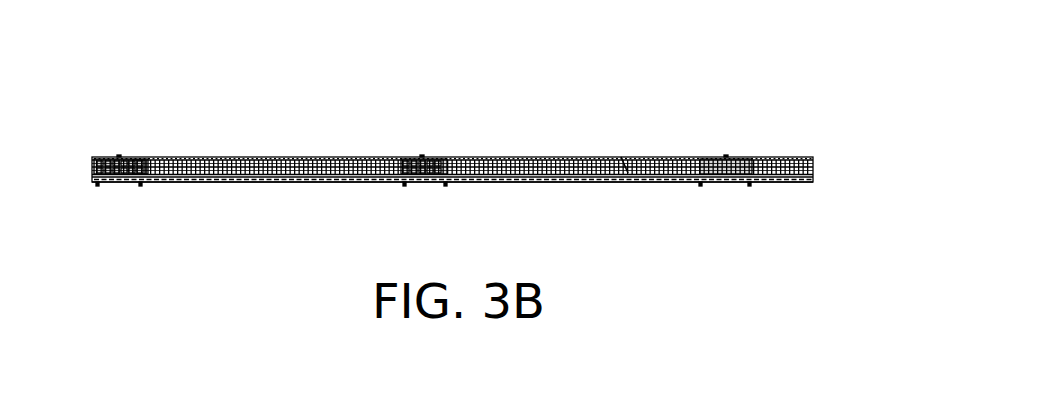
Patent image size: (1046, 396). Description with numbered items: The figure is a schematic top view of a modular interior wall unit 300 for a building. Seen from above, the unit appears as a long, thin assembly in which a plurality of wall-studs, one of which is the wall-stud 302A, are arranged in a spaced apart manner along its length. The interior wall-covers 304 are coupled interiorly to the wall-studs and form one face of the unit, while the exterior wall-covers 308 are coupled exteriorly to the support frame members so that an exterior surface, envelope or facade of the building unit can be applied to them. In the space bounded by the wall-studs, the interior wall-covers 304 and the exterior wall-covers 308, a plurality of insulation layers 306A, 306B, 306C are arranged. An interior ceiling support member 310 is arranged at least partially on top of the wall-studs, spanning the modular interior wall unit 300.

The modular interior wall unit 300 is at (788, 60).
The wall-stud 302A is at (138, 157).
The interior wall-covers 304 is at (248, 187).
The insulation layer 306A is at (100, 157).
The insulation layer 306B is at (412, 157).
The insulation layer 306C is at (735, 157).
The exterior wall-covers 308 is at (503, 157).
The interior ceiling support member 310 is at (621, 157).